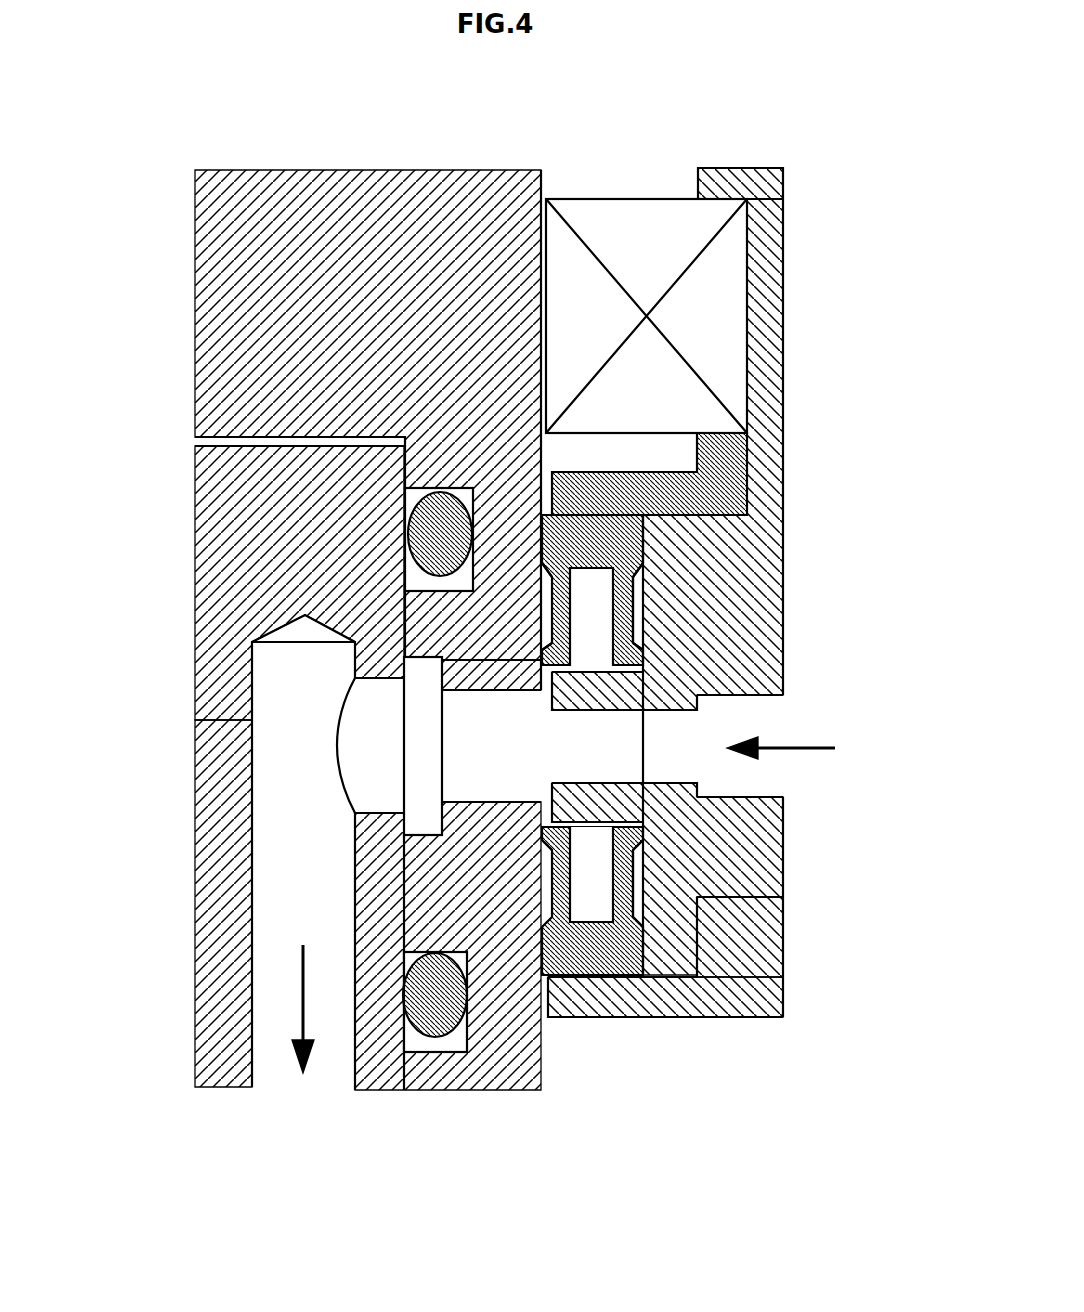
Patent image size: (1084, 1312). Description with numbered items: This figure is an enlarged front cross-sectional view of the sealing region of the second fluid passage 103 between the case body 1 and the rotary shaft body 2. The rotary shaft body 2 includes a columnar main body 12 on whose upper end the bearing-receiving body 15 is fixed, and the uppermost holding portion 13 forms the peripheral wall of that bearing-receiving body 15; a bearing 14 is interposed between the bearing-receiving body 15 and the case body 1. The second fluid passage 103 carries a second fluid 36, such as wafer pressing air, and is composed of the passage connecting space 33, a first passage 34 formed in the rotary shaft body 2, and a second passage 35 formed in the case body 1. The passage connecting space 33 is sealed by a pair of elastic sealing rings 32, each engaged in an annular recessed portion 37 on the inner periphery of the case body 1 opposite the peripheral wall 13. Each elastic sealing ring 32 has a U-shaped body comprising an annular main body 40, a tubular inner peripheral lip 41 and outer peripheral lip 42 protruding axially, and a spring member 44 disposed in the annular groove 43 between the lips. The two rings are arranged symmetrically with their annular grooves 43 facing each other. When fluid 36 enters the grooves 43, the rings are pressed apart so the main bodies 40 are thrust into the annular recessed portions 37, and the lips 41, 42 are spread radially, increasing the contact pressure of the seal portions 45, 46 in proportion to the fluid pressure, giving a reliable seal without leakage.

The case body 1 is at (772, 462).
The rotary shaft body 2 is at (222, 1060).
The main body 12 is at (265, 500).
The holding portion 13 is at (488, 1070).
The bearing 14 is at (706, 288).
The bearing-receiving body 15 is at (291, 228).
The elastic sealing ring 32 is at (576, 500).
The passage connecting space 33 is at (541, 738).
The first passage 34 is at (263, 975).
The second passage 35 is at (650, 758).
The second fluid 36 is at (777, 750).
The annular recessed portion 37 is at (636, 604).
The annular main body 40 is at (610, 540).
The inner peripheral lip 41 is at (553, 592).
The outer peripheral lip 42 is at (632, 585).
The annular groove 43 is at (645, 712).
The spring member 44 is at (583, 782).
The seal portion 45 is at (543, 660).
The seal portion 46 is at (647, 660).
The second fluid passage 103 is at (232, 887).